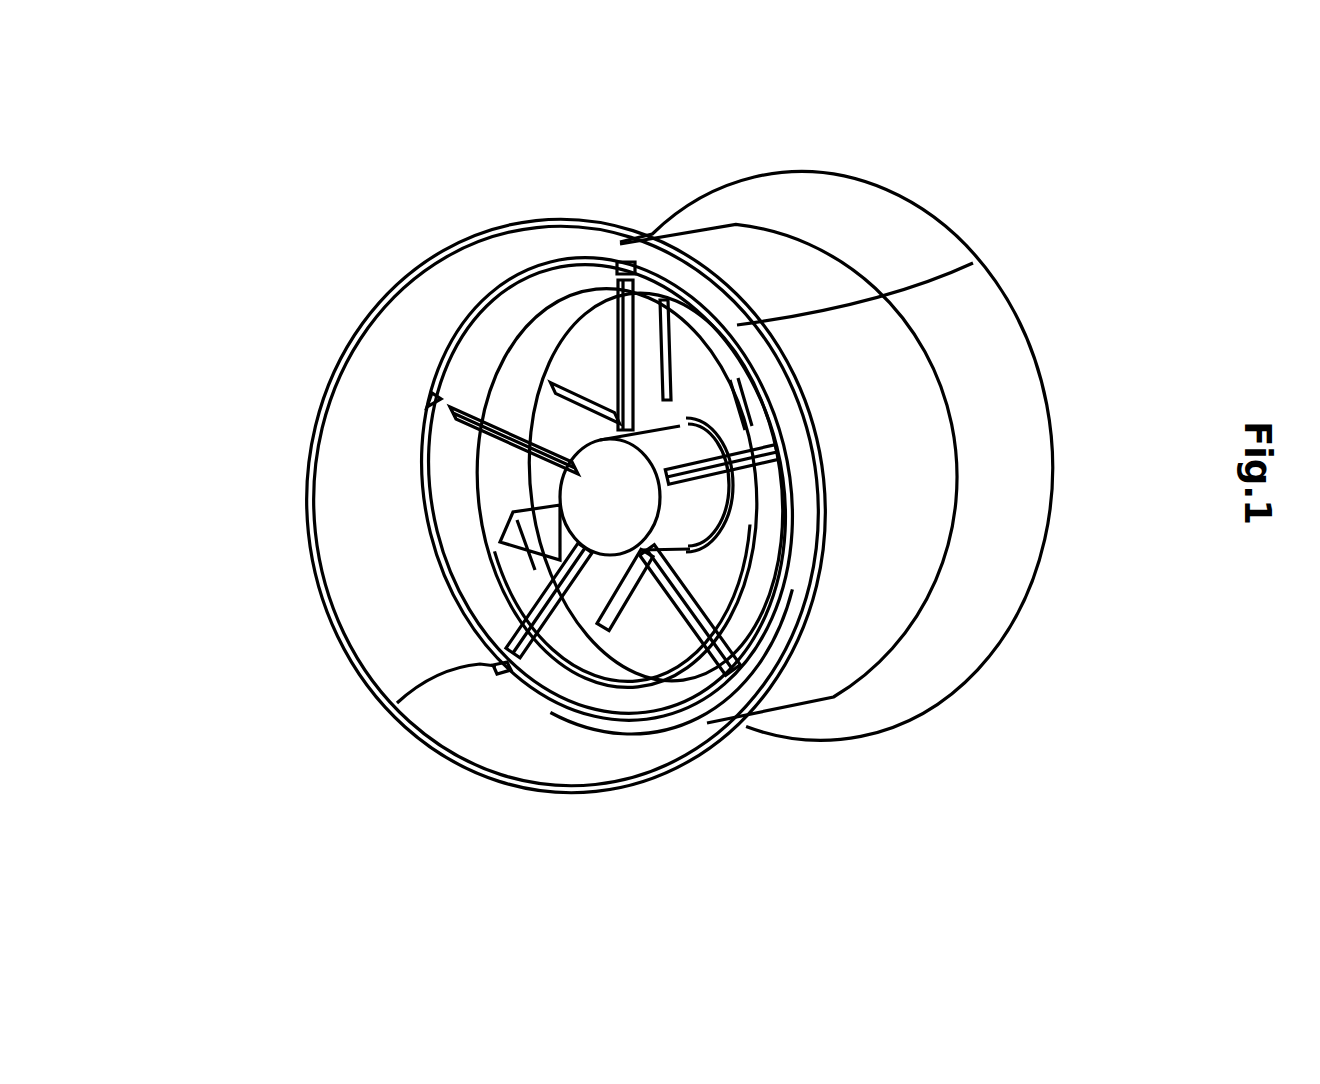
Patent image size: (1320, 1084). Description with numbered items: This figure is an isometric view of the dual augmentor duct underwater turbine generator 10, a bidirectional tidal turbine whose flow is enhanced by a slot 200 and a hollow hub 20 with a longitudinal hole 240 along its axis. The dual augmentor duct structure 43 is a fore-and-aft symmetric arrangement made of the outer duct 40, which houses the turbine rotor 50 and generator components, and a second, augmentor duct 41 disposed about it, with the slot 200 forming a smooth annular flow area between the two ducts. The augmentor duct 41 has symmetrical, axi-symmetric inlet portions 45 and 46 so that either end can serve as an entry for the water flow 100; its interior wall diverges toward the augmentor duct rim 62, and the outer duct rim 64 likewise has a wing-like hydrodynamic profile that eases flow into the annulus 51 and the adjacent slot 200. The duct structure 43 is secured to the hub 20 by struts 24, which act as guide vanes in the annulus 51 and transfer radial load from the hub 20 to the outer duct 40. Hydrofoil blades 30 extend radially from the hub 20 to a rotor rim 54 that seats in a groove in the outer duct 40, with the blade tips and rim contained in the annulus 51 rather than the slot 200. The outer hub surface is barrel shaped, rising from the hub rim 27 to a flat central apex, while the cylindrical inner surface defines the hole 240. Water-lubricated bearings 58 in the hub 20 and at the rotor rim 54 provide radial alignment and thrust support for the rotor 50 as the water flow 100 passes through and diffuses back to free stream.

The dual augmentor duct underwater turbine generator 10 is at (975, 222).
The hollow hub 20 is at (683, 440).
The struts 24 is at (712, 675).
The hub rim 27 is at (545, 533).
The blades 30 is at (760, 568).
The outer duct 40 is at (497, 325).
The augmentor duct 41 is at (400, 333).
The dual augmentor duct structure 43 is at (318, 353).
The inlet portion 45 is at (428, 720).
The inlet portion 46 is at (990, 552).
The turbine rotor 50 is at (598, 322).
The annulus 51 is at (560, 305).
The rotor rim 54 is at (625, 673).
The bearings 58 is at (573, 472).
The augmentor duct rim 62 is at (437, 777).
The outer duct rim 64 is at (573, 710).
The water flow 100 is at (1053, 332).
The slot 200 is at (413, 455).
The longitudinal hole 240 is at (573, 502).